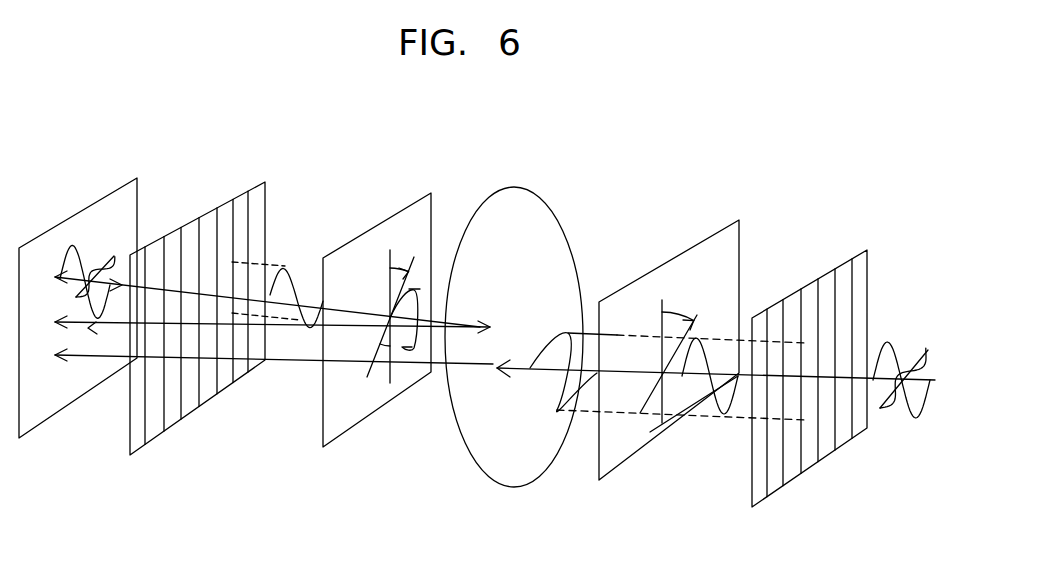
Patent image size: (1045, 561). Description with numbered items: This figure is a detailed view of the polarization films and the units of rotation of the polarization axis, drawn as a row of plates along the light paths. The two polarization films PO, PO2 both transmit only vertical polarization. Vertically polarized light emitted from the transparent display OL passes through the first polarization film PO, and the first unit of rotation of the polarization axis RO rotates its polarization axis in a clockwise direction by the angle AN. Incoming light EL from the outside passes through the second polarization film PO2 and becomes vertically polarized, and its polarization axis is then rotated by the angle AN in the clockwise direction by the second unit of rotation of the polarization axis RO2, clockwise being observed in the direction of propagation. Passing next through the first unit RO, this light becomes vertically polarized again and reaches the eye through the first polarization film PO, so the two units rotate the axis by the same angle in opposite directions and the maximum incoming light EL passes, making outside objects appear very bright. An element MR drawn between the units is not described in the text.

The transparent display OL is at (33, 430).
The first polarization film PO is at (135, 443).
The first unit of rotation of the polarization axis RO is at (330, 440).
The angle AN is at (532, 331).
The mirror MR is at (510, 483).
The second unit of rotation of the polarization axis RO2 is at (613, 462).
The second polarization film PO2 is at (757, 495).
The incoming light EL is at (901, 393).